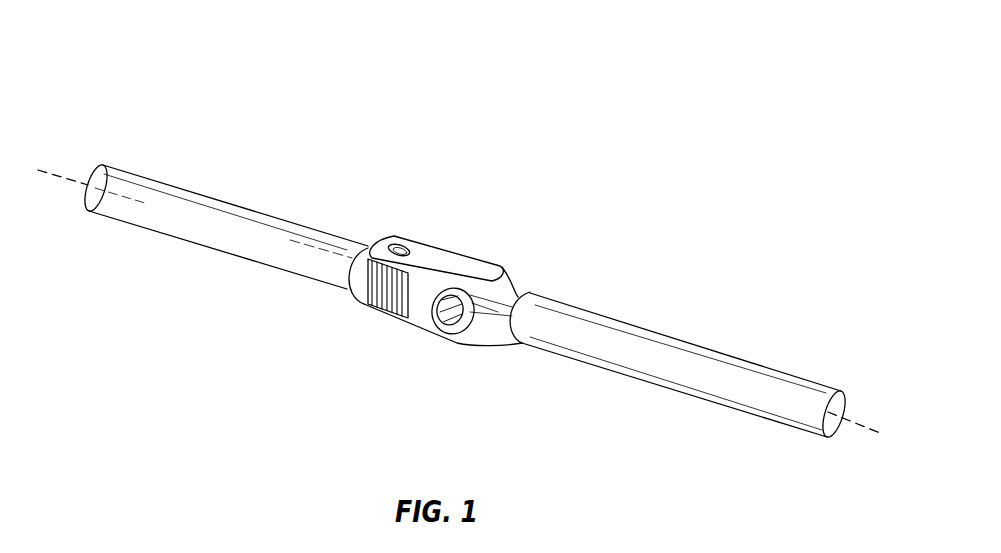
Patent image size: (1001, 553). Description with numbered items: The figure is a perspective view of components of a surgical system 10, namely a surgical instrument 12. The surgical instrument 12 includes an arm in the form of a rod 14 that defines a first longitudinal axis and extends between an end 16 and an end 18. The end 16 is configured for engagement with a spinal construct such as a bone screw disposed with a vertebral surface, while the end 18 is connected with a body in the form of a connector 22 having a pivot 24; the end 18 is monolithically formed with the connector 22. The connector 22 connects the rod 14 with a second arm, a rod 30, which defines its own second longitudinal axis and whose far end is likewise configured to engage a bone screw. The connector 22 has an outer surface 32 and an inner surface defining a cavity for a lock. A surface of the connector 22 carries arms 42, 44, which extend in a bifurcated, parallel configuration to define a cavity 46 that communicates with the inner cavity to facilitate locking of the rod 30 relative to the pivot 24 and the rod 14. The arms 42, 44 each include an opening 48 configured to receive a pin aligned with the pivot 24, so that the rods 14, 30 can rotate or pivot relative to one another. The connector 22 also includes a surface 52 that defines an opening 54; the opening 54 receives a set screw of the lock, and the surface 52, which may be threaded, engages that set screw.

The surgical system 10 is at (110, 34).
The surgical instrument 12 is at (163, 121).
The rod 14 is at (700, 375).
The end 16 is at (812, 393).
The end 18 is at (528, 315).
The connector 22 is at (392, 320).
The pivot 24 is at (400, 249).
The rod 30 is at (227, 230).
The outer surface 32 is at (470, 263).
The arm 42 is at (380, 250).
The arm 44 is at (372, 312).
The cavity 46 is at (402, 320).
The opening 48 is at (410, 249).
The surface 52 is at (467, 320).
The opening 54 is at (446, 328).